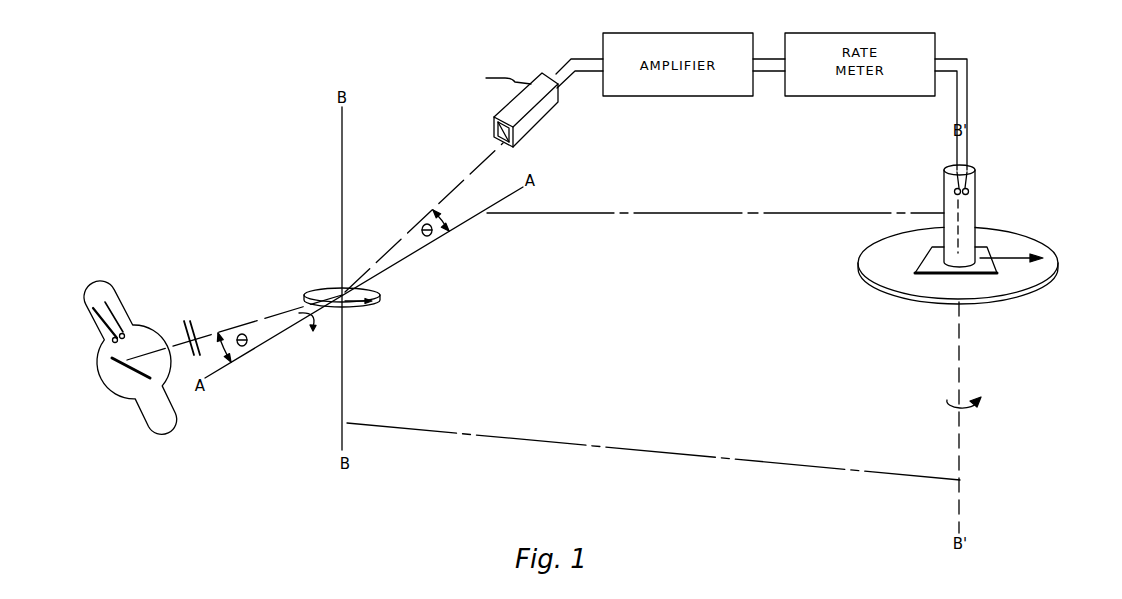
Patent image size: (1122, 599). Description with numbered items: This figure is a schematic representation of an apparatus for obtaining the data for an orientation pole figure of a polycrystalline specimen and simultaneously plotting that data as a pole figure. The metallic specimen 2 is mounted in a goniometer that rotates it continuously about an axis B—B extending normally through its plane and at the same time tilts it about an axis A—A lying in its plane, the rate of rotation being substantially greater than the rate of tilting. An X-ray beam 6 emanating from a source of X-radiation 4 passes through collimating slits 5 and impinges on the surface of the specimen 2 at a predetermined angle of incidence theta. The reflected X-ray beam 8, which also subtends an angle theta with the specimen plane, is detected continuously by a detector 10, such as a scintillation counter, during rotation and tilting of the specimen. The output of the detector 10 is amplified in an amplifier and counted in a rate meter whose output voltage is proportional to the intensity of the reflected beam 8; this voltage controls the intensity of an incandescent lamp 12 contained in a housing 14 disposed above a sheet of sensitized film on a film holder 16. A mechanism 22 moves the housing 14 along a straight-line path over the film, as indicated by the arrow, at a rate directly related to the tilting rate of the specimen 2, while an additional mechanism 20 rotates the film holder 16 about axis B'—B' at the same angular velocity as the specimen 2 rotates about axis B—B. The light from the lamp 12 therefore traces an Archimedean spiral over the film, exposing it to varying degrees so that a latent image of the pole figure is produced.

The metallic specimen 2 is at (380, 298).
The source of X-radiation 4 is at (141, 324).
The collimating slits 5 is at (190, 320).
The X-ray beam 6 is at (246, 324).
The reflected X-ray beam 8 is at (434, 206).
The detector 10 is at (538, 116).
The incandescent lamp 12 is at (975, 187).
The housing 14 is at (977, 207).
The film holder 16 is at (1043, 280).
The mechanism 20 is at (713, 461).
The mechanism 22 is at (711, 212).